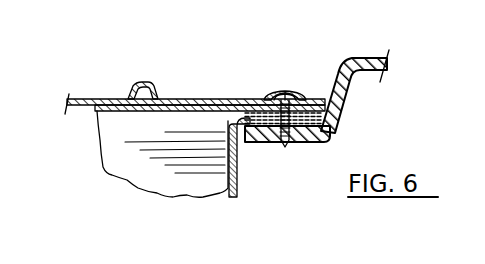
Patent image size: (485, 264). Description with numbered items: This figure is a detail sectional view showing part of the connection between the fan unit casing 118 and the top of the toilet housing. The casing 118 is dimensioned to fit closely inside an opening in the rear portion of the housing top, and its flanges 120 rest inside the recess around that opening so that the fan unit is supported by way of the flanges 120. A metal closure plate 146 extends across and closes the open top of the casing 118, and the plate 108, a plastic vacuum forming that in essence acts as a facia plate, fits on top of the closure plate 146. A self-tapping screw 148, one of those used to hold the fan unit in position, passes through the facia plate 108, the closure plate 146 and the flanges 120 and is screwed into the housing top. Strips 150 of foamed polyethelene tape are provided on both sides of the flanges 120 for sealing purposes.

The plate 108 is at (178, 99).
The metal closure plate 146 is at (140, 113).
The casing 118 is at (240, 175).
The flanges 120 is at (345, 122).
The strips of foamed polyethelene tape 150 is at (305, 101).
The self-tapping screw 148 is at (285, 147).